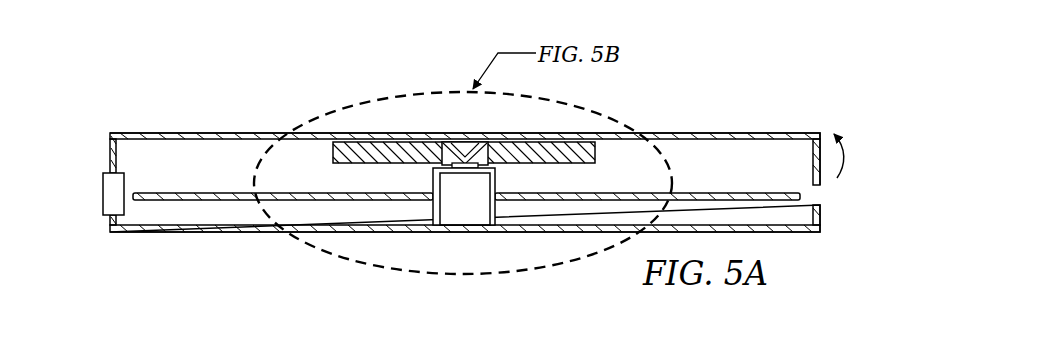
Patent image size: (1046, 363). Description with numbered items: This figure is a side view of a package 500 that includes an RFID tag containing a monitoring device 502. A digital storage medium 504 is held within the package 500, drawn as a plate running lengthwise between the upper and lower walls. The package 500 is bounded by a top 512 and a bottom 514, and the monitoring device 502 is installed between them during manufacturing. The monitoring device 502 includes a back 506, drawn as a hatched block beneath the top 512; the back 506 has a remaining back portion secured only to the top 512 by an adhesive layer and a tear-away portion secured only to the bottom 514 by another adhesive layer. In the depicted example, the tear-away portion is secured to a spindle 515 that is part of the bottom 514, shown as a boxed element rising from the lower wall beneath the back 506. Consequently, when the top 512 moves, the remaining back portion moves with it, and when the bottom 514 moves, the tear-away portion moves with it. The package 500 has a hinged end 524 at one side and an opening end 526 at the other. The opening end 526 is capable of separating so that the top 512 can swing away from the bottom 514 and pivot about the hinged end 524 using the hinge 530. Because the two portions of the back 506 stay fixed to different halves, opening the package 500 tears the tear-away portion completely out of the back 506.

The package 500 is at (724, 87).
The monitoring device 502 is at (319, 154).
The digital storage medium 504 is at (724, 192).
The back 506 is at (601, 157).
The top 512 is at (188, 132).
The bottom 514 is at (220, 233).
The spindle 515 is at (483, 212).
The hinged end 524 is at (110, 150).
The opening end 526 is at (818, 197).
The hinge 530 is at (106, 217).